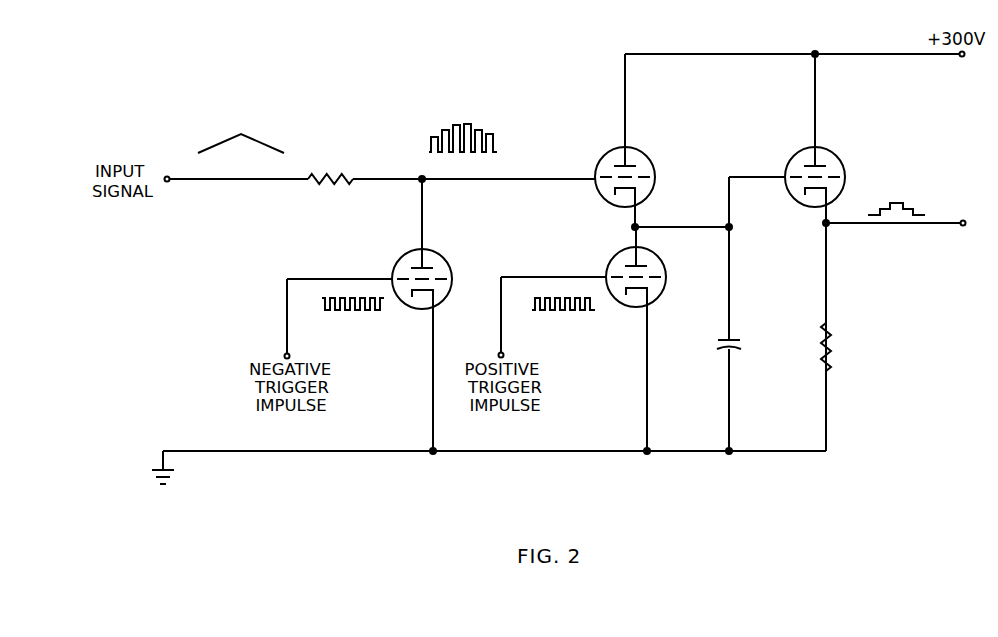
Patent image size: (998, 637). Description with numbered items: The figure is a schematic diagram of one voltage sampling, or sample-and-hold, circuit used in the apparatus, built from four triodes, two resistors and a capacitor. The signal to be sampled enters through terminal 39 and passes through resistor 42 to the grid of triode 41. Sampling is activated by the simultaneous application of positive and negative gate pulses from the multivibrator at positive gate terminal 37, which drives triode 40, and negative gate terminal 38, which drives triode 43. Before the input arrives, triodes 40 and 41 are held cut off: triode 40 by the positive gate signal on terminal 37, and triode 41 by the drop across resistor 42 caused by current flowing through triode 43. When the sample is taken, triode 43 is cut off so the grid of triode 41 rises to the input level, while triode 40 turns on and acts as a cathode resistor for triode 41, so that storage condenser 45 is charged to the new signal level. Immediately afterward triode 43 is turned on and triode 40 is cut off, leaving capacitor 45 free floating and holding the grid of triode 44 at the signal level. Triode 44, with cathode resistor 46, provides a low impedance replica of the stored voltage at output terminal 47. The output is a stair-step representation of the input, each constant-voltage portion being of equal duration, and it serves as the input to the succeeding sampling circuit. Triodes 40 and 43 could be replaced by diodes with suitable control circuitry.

The positive gate terminal 37 is at (503, 353).
The negative gate terminal 38 is at (289, 354).
The input terminal 39 is at (169, 182).
The triode 40 is at (655, 258).
The triode 41 is at (647, 158).
The resistor 42 is at (335, 183).
The triode 43 is at (443, 259).
The triode 44 is at (837, 158).
The storage capacitor 45 is at (734, 340).
The cathode resistor 46 is at (831, 336).
The output terminal 47 is at (962, 226).